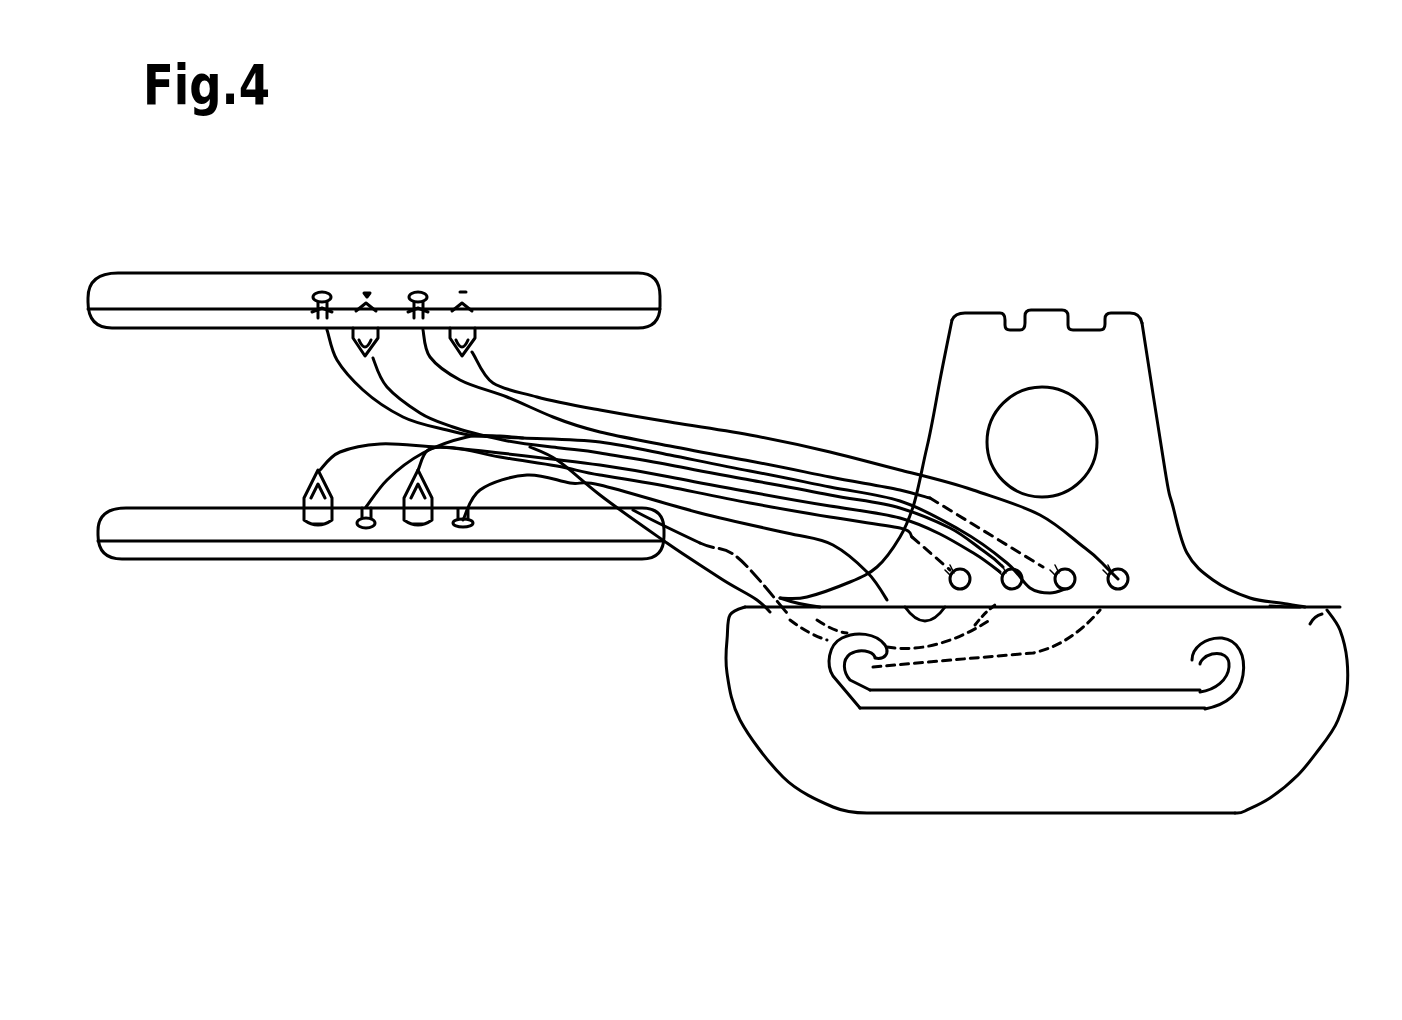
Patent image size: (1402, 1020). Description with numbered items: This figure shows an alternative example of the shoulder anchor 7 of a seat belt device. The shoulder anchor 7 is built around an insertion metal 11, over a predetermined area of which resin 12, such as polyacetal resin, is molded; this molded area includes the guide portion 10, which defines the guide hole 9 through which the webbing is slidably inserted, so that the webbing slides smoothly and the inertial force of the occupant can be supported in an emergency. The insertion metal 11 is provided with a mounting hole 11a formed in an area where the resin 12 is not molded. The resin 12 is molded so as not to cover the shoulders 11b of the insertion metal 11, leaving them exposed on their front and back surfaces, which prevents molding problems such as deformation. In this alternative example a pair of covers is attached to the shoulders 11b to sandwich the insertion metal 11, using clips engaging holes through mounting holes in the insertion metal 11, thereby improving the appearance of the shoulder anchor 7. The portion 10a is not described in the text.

The shoulder anchor 7 is at (885, 393).
The guide hole 9 is at (933, 707).
The guide portion 10 is at (983, 757).
The housing side portion 10a is at (1090, 712).
The insertion metal 11 is at (1155, 504).
The mounting hole 11a is at (1074, 455).
The shoulders 11b is at (797, 600).
The resin 12 is at (1340, 608).